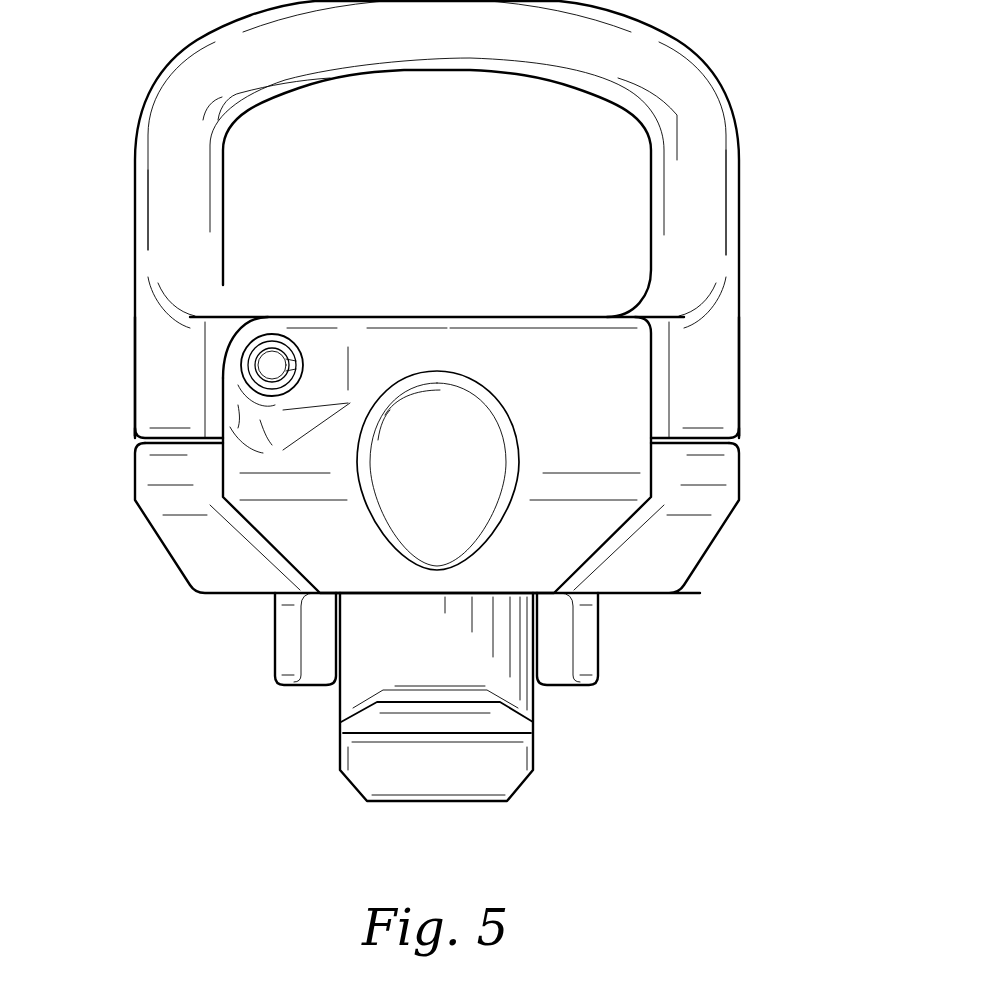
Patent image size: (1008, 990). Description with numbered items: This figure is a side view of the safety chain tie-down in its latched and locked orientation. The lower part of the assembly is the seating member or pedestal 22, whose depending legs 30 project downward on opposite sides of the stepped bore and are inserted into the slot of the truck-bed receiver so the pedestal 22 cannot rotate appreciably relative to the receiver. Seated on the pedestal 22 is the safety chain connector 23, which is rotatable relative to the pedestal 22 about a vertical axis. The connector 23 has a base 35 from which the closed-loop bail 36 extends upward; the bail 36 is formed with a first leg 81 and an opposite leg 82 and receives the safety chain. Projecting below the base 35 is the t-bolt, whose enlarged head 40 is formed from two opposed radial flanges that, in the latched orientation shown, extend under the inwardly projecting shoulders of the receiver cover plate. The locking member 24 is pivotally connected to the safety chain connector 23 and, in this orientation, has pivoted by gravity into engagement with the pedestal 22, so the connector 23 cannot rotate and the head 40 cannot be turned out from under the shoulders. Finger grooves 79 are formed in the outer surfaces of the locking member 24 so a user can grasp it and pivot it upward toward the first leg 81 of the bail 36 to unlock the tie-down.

The bail 36 is at (712, 94).
The opposite leg of bail 82 is at (733, 173).
The first leg of bail 81 is at (135, 190).
The safety chain connector 23 is at (793, 294).
The base 35 is at (718, 380).
The pedestal 22 is at (748, 530).
The locking member 24 is at (445, 317).
The finger grooves 79 is at (465, 420).
The legs 30 is at (278, 686).
The head 40 is at (432, 804).